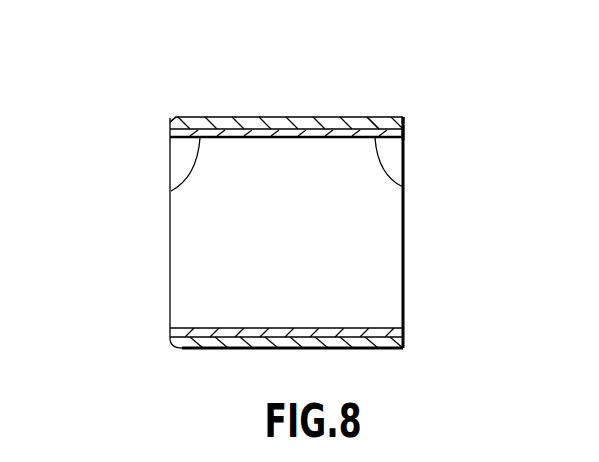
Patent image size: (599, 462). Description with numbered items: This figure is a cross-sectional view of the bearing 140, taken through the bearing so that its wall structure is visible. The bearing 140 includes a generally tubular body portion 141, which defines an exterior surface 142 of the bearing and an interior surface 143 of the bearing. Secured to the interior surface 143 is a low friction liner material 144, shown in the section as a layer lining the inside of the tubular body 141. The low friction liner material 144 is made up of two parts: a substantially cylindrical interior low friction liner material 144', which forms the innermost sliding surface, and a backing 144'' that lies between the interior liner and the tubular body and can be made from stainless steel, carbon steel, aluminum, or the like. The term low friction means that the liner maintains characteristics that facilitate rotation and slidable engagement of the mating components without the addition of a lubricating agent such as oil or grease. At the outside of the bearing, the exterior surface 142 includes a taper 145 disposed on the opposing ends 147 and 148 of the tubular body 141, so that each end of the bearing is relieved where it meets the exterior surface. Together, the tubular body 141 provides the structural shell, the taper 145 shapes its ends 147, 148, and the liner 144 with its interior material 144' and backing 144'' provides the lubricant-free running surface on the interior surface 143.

The bearing 140 is at (200, 78).
The tubular body portion 141 is at (308, 117).
The exterior surface 142 is at (222, 117).
The interior surface 143 is at (171, 191).
The low friction liner material 144 is at (450, 137).
The interior low friction liner material 144' is at (437, 180).
The backing 144'' is at (422, 95).
The taper 145 is at (178, 118).
The end of tubular body 147 is at (163, 327).
The end of tubular body 148 is at (413, 119).